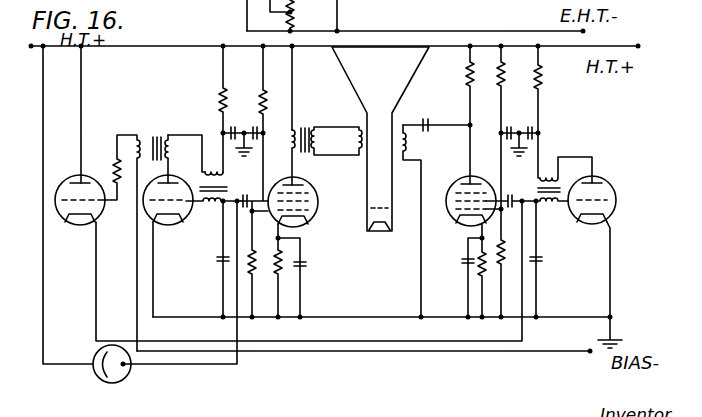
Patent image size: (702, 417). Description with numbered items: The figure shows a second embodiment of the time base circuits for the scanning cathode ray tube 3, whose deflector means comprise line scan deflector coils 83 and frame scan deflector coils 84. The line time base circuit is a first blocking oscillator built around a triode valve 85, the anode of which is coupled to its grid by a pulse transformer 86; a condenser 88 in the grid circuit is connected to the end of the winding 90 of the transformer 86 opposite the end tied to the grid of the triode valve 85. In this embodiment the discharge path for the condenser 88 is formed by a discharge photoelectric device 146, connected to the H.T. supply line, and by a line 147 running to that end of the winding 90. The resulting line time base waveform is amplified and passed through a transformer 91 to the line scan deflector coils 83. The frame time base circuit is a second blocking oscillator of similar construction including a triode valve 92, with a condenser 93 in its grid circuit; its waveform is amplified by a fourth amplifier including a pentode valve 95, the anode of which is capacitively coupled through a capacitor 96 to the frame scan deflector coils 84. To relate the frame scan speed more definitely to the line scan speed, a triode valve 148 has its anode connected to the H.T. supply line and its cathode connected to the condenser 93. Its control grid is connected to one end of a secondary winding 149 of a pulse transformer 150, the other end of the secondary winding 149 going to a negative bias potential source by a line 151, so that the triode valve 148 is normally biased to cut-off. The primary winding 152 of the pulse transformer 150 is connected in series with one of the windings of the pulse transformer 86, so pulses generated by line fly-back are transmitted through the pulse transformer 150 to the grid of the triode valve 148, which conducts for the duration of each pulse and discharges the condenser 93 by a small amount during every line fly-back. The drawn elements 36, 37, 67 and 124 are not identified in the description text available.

The scanning cathode ray tube 3 is at (388, 89).
The circuit element 36 is at (216, 6).
The amplifier valve 37 is at (304, 221).
The E.H.T. supply lead 67 is at (396, 30).
The line scan deflector coils 83 is at (352, 133).
The frame scan deflector coils 84 is at (412, 141).
The triode valve 85 is at (168, 219).
The pulse transformer 86 is at (211, 164).
The condenser 88 is at (216, 259).
The winding 90 is at (213, 213).
The transformer 91 is at (301, 121).
The triode valve 92 is at (600, 176).
The condenser 93 is at (542, 262).
The pentode valve 95 is at (454, 221).
The capacitor 96 is at (424, 118).
The potentiometer resistor 124 is at (292, 15).
The discharge photoelectric device 146 is at (96, 353).
The line 147 is at (237, 363).
The triode valve 148 is at (68, 223).
The secondary winding 149 is at (145, 139).
The pulse transformer 150 is at (156, 136).
The line 151 is at (406, 351).
The primary winding 152 is at (173, 190).